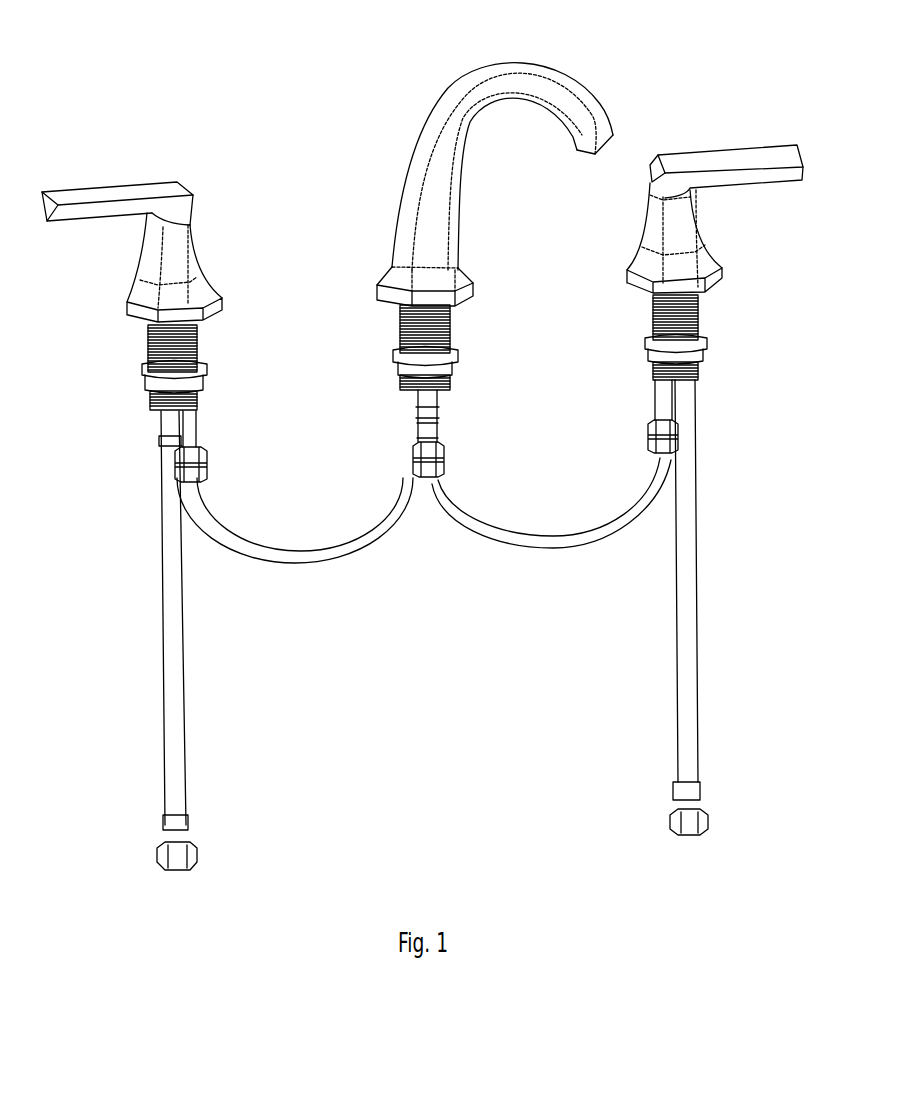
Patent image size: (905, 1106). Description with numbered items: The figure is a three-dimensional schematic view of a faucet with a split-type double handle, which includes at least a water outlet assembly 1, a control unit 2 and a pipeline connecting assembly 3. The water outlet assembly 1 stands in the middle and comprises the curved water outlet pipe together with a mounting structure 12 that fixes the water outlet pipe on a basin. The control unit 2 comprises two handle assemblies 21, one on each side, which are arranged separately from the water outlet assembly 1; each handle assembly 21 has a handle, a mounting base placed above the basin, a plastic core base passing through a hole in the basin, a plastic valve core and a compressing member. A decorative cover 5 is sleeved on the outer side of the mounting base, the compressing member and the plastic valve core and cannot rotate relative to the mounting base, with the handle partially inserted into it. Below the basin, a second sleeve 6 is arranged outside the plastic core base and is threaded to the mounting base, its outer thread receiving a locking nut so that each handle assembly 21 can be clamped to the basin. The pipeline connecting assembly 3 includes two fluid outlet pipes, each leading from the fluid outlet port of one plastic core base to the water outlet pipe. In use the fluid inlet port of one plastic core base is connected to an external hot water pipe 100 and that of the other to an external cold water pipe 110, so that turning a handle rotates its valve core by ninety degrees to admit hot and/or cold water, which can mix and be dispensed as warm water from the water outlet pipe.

The water outlet assembly 1 is at (475, 63).
The control unit 2 is at (242, 25).
The handle assembly 21 is at (283, 37).
The decorative cover 5 is at (200, 258).
The second sleeve 6 is at (150, 348).
The mounting structure 12 is at (387, 333).
The pipeline connecting assembly 3 is at (455, 543).
The external hot water pipe 100 is at (163, 632).
The external cold water pipe 110 is at (677, 618).